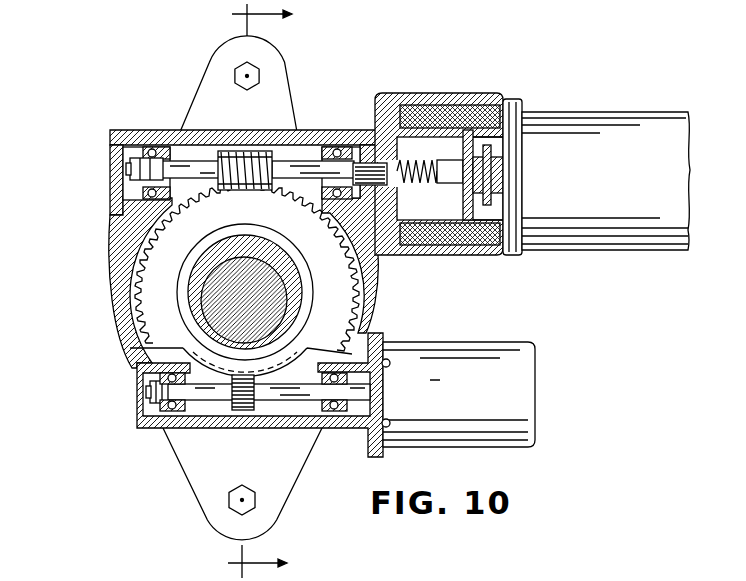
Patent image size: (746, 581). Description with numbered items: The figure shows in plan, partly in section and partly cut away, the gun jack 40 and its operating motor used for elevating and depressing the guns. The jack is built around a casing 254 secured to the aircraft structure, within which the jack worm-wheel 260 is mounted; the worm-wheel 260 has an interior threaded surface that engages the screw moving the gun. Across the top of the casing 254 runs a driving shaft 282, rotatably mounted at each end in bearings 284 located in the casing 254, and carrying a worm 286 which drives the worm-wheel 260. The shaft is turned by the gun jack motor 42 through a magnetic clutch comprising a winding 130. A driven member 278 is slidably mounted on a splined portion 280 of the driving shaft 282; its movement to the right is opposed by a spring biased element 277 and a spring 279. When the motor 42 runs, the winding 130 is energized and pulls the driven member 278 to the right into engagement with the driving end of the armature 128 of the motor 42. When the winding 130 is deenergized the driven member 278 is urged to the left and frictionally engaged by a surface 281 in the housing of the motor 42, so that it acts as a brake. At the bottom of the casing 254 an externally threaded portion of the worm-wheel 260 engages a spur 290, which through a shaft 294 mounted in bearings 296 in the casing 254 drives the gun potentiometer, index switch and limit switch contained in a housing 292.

The gun jack 40 is at (93, 325).
The gun jack motor 42 is at (600, 110).
The armature 128 is at (534, 124).
The winding 130 is at (440, 136).
The casing 254 is at (172, 130).
The worm-wheel 260 is at (160, 251).
The spring biased element 277 is at (455, 251).
The driven member 278 is at (466, 135).
The spring 279 is at (392, 255).
The splined portion 280 is at (365, 145).
The surface 281 is at (430, 128).
The driving shaft 282 is at (200, 165).
The bearings 284 is at (152, 148).
The worm 286 is at (258, 150).
The spur 290 is at (243, 425).
The housing 292 is at (440, 342).
The shaft 294 is at (278, 402).
The bearings 296 is at (167, 428).